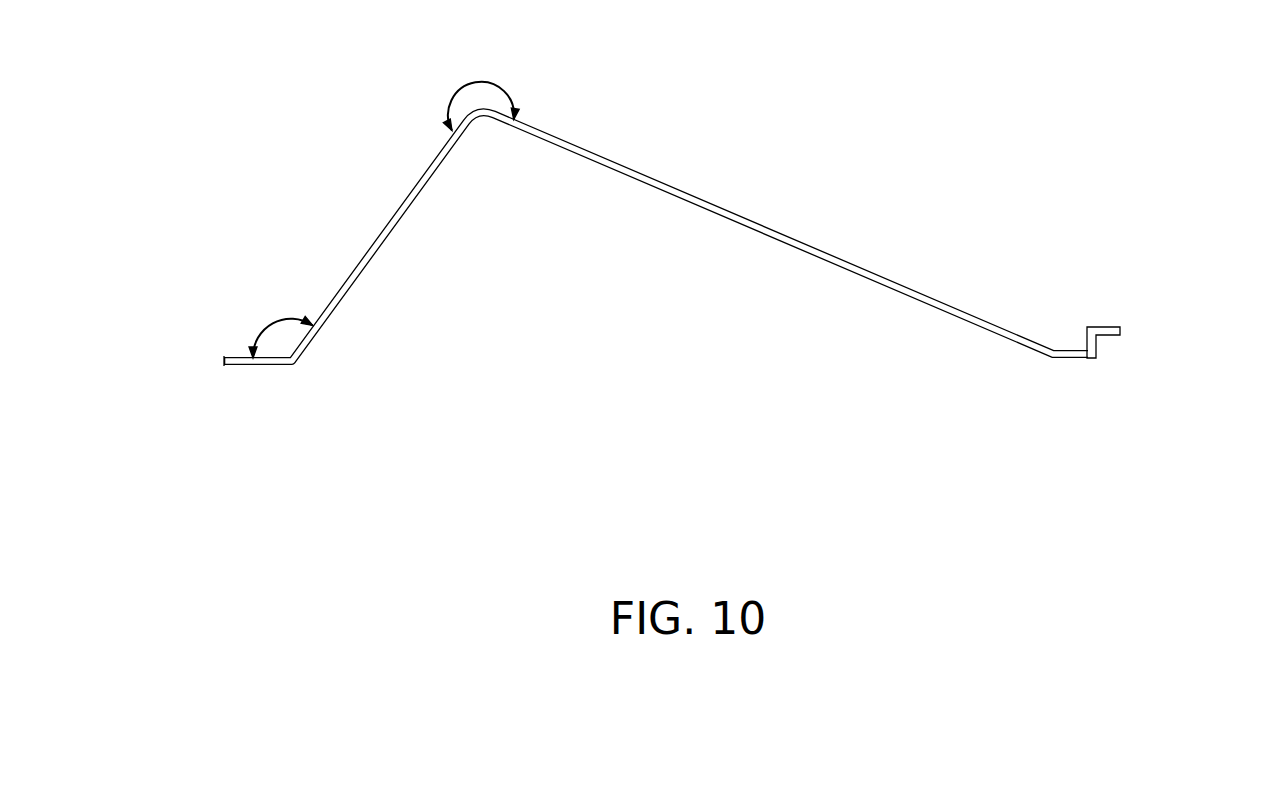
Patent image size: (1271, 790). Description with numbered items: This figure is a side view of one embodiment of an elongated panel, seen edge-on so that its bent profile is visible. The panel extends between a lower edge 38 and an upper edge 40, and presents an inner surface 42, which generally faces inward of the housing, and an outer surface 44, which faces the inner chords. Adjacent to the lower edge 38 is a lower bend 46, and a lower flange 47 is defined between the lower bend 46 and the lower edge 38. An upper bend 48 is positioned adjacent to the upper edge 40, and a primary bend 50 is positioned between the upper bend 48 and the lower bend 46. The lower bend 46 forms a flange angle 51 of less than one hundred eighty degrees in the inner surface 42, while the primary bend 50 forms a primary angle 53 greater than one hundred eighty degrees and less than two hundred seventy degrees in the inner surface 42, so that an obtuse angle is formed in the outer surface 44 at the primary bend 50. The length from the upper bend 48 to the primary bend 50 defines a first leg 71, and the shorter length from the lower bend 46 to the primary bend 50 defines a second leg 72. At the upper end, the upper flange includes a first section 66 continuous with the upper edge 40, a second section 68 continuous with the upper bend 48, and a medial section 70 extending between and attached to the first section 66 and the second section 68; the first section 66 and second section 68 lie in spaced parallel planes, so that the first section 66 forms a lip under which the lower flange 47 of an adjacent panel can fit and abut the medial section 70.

The lower edge 38 is at (223, 361).
The upper edge 40 is at (1120, 331).
The inner surface 42 is at (778, 232).
The outer surface 44 is at (727, 220).
The lower bend 46 is at (294, 368).
The lower flange 47 is at (262, 368).
The upper bend 48 is at (1052, 360).
The primary bend 50 is at (481, 123).
The flange angle 51 is at (281, 320).
The primary angle 53 is at (477, 83).
The first section 66 is at (1101, 327).
The second section 68 is at (1073, 362).
The medial section 70 is at (1087, 343).
The first leg 71 is at (893, 283).
The second leg 72 is at (378, 238).